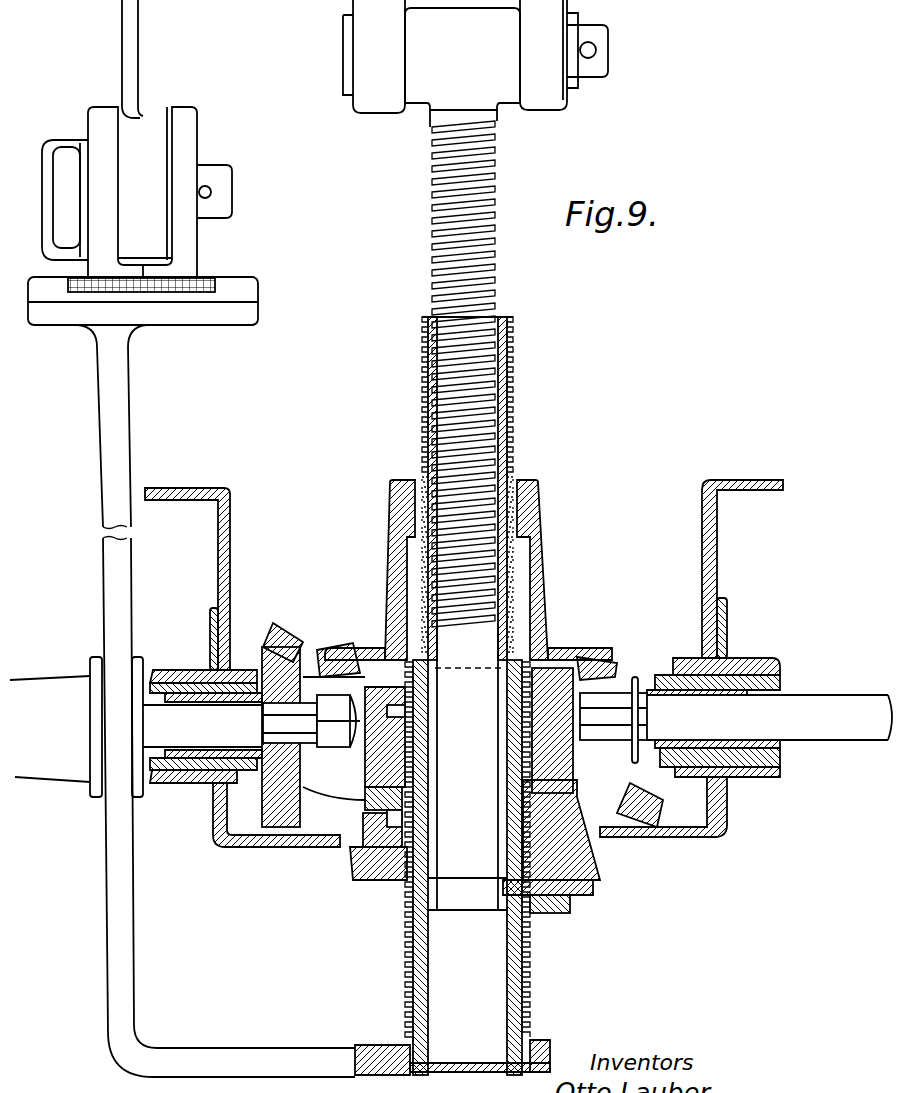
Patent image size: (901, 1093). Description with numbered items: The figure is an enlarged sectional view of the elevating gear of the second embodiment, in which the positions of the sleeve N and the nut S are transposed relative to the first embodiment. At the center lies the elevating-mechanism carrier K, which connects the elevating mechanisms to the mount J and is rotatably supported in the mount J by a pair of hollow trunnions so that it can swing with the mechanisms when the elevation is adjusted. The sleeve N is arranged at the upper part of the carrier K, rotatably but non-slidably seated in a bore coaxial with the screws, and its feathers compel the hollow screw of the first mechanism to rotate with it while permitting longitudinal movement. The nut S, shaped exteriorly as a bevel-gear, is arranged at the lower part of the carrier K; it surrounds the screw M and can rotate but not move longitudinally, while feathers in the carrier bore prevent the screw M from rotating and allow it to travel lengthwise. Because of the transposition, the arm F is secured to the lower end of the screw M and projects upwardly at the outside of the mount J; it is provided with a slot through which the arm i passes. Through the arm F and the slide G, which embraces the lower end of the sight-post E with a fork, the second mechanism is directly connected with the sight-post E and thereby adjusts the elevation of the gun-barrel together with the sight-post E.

The sight-post E is at (157, 39).
The slide G is at (185, 266).
The arm F is at (103, 440).
The mount J is at (227, 520).
The sleeve N is at (530, 506).
The elevating-mechanism carrier K is at (393, 752).
The nut S is at (543, 870).
The screw M is at (530, 1013).
The arm i is at (62, 765).